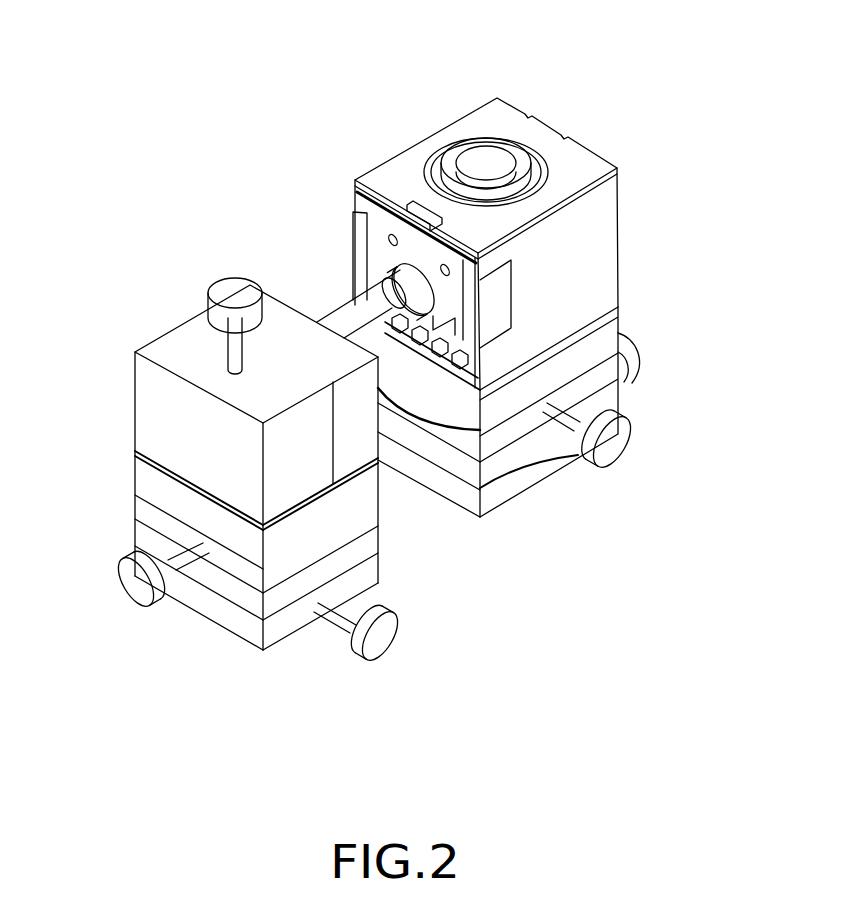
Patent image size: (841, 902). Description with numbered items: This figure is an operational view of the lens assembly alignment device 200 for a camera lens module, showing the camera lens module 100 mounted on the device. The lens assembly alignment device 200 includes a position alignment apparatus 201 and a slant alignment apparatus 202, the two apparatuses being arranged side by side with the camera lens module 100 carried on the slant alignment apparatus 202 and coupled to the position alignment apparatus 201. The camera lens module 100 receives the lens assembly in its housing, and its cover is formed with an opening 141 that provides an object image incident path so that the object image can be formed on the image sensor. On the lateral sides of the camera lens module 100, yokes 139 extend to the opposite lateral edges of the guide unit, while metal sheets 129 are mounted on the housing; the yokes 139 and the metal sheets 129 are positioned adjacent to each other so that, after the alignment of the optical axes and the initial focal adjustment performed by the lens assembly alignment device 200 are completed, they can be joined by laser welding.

The lens assembly alignment device 200 is at (256, 52).
The position alignment apparatus 201 is at (104, 384).
The slant alignment apparatus 202 is at (668, 388).
The camera lens module 100 is at (612, 118).
The metal sheets 129 is at (503, 272).
The yokes 139 is at (355, 215).
The opening 141 is at (497, 135).